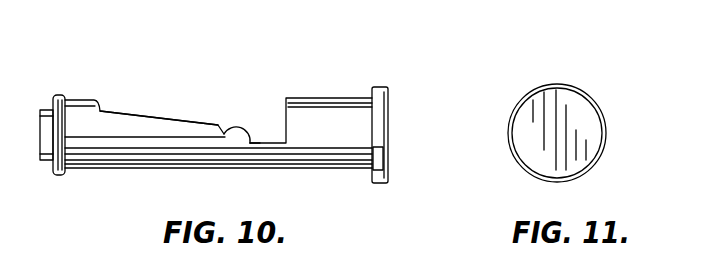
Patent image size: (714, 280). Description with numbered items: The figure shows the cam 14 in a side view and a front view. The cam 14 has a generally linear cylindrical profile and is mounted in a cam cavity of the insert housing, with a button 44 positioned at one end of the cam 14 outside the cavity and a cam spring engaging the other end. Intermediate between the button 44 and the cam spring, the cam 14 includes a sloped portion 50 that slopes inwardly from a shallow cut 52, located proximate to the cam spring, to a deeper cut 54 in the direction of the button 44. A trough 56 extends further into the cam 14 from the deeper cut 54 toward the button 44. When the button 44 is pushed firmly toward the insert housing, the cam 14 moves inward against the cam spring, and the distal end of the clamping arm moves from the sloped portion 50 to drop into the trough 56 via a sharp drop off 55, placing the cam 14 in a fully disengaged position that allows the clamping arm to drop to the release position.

In FIG. 10, the cam 14 is at (124, 175).
In FIG. 11, the cam 14 is at (559, 80).
In FIG. 10, the button 44 is at (390, 125).
In FIG. 11, the button 44 is at (532, 147).
In FIG. 10, the sloped portion 50 is at (152, 117).
In FIG. 10, the shallow cut 52 is at (102, 100).
In FIG. 10, the deeper cut 54 is at (225, 127).
In FIG. 10, the sharp drop off 55 is at (250, 143).
In FIG. 10, the trough 56 is at (281, 142).